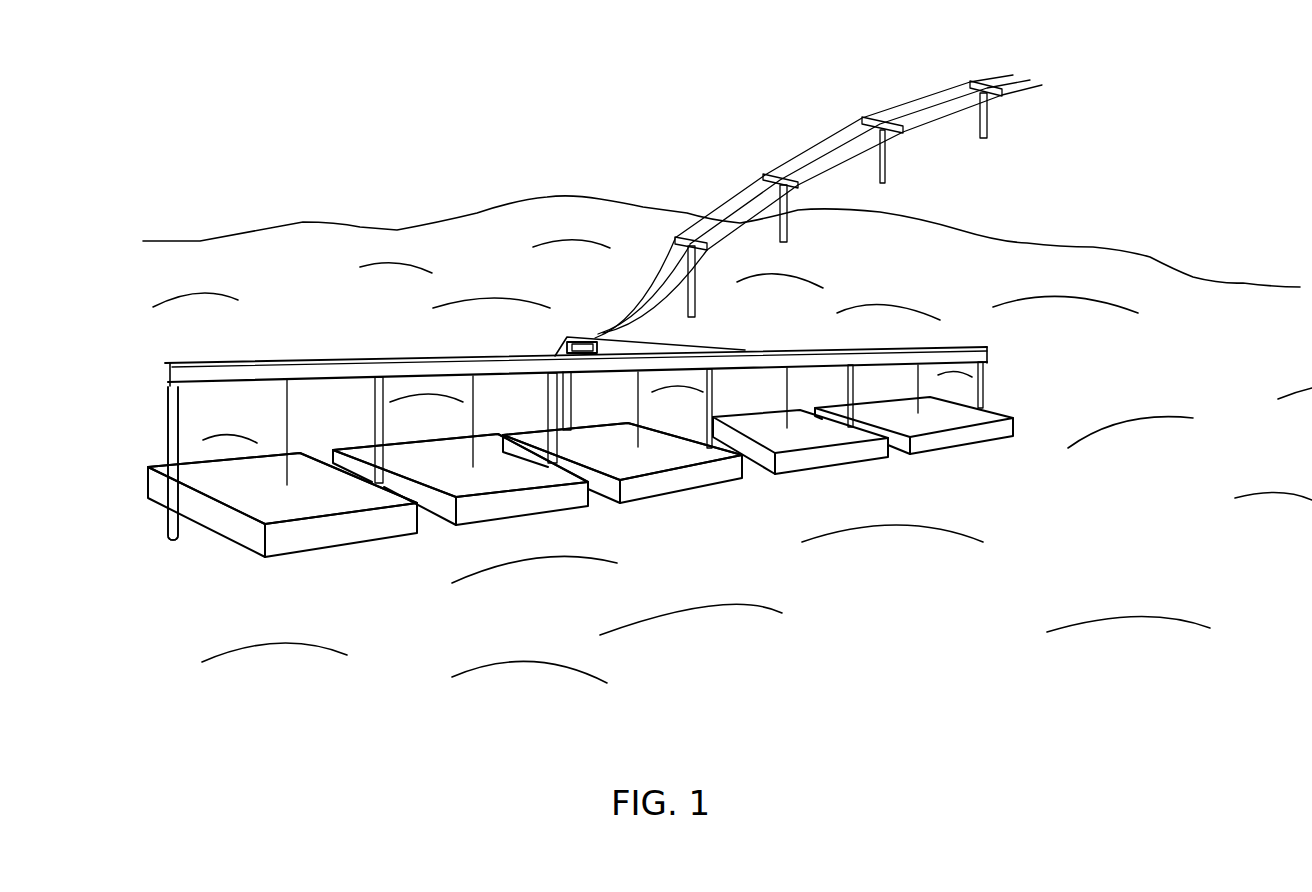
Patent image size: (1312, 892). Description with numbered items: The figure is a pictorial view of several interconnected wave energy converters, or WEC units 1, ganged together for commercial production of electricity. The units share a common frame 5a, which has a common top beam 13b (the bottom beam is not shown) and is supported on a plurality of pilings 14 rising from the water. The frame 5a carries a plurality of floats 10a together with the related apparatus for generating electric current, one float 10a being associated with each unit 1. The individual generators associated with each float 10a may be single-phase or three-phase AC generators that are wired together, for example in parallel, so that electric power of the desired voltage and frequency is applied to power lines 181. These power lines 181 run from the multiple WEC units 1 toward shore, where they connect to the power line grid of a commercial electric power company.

The WEC unit 1 is at (358, 557).
The common frame 5a is at (148, 413).
The float 10a is at (334, 502).
The common top beam 13b is at (230, 363).
The piling 14 is at (169, 443).
The power lines 181 is at (918, 95).